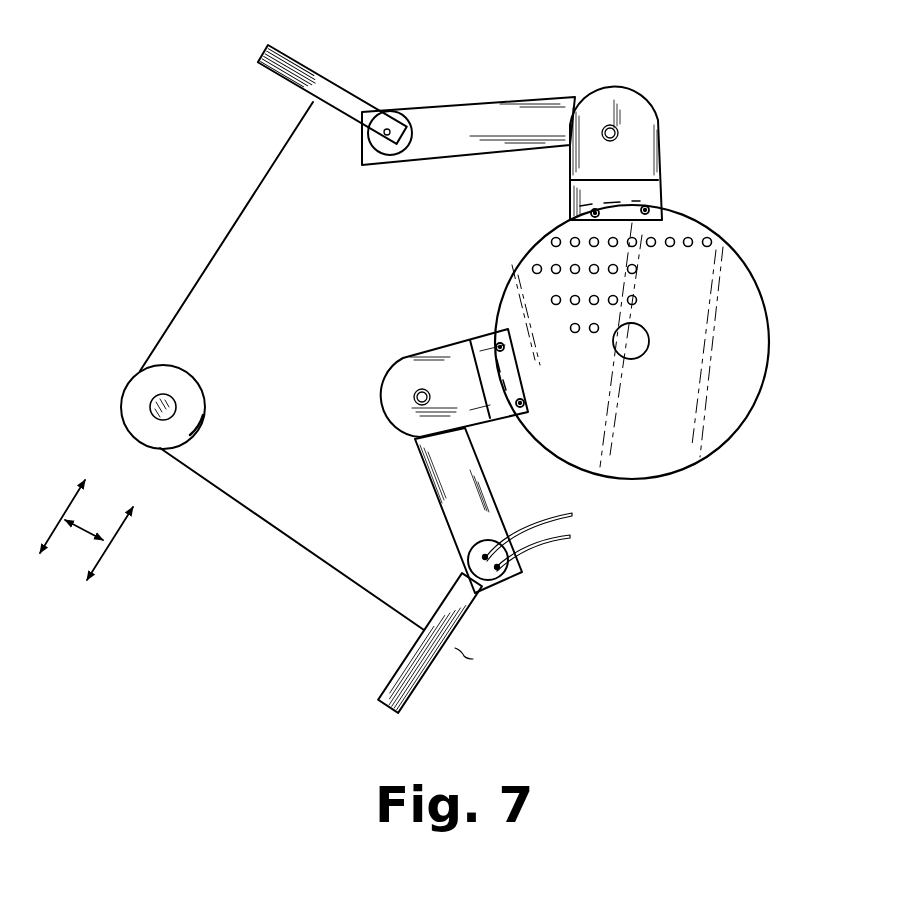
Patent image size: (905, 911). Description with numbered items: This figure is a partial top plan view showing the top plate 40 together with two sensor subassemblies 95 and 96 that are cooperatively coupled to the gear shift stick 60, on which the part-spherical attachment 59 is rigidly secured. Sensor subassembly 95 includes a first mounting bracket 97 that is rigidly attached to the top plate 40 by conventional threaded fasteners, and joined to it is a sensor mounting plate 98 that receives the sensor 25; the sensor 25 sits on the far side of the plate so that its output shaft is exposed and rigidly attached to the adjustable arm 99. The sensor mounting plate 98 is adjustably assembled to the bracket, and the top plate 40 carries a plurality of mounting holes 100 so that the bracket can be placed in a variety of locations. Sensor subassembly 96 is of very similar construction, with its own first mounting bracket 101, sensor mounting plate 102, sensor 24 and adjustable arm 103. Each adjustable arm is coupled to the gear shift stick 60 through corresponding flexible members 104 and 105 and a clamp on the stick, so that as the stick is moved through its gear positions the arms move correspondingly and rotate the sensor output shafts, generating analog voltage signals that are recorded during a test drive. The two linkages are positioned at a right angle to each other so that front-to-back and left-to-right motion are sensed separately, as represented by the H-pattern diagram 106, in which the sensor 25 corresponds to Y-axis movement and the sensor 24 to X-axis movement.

The sensor 24 is at (475, 557).
The sensor 25 is at (403, 113).
The top plate 40 is at (639, 330).
The attachment 59 is at (181, 407).
The gear shift stick 60 is at (173, 397).
The sensor subassembly 95 is at (482, 121).
The sensor subassembly 96 is at (456, 480).
The first mounting bracket 97 is at (655, 120).
The sensor mounting plate 98 is at (468, 119).
The adjustable arm 99 is at (355, 102).
The mounting holes 100 is at (688, 239).
The first mounting bracket 101 is at (436, 345).
The sensor mounting plate 102 is at (483, 486).
The adjustable arm 103 is at (460, 609).
The flexible member 104 is at (195, 290).
The flexible member 105 is at (292, 539).
The H-pattern diagram 106 is at (108, 550).